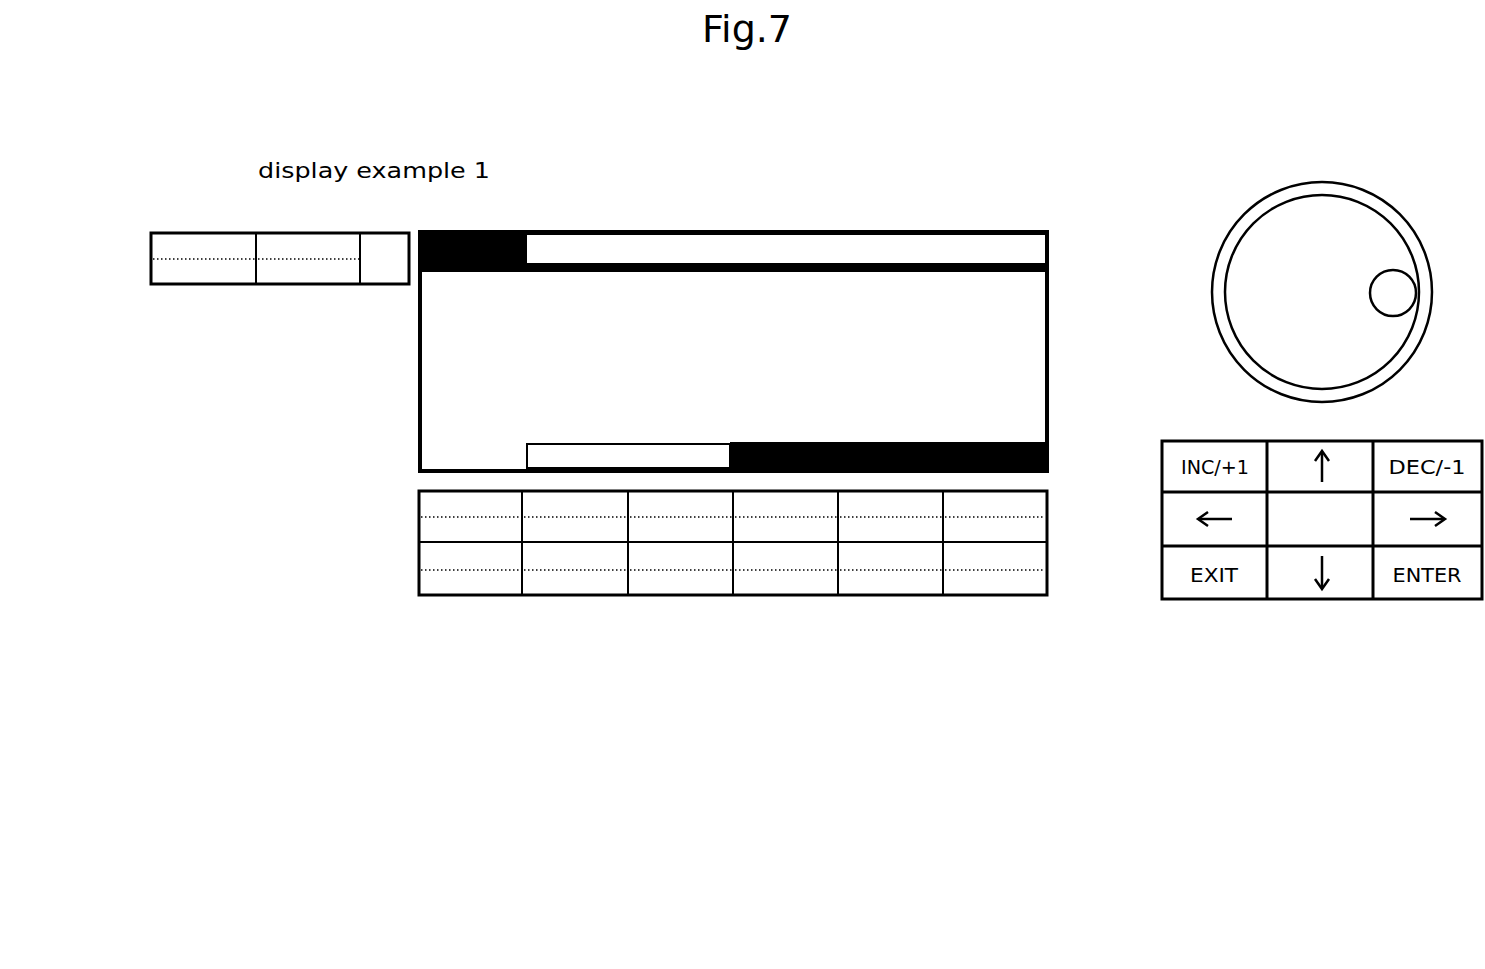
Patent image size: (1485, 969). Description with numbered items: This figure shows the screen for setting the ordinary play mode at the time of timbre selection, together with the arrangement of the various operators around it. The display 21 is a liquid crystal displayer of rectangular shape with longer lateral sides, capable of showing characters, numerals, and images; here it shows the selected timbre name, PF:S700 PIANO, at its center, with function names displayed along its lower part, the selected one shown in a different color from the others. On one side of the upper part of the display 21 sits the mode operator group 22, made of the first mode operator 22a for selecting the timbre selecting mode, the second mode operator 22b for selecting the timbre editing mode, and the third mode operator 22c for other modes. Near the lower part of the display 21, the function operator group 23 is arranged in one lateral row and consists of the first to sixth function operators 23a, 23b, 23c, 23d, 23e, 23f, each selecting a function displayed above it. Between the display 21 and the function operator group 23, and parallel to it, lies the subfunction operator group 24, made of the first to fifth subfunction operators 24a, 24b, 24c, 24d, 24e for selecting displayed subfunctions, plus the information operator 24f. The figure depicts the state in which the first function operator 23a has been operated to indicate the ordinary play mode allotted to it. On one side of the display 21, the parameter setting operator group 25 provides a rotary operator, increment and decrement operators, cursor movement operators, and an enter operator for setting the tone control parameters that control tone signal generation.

The display 21 is at (1062, 387).
The mode operator group 22 is at (280, 324).
The first mode operator 22a is at (197, 272).
The second mode operator 22b is at (312, 272).
The third mode operator 22c is at (385, 278).
The function operator group 23 is at (687, 612).
The first function operator 23a is at (472, 580).
The second function operator 23b is at (583, 580).
The third function operator 23c is at (693, 580).
The fourth function operator 23d is at (795, 580).
The fifth function operator 23e is at (900, 580).
The sixth function operator 23f is at (1000, 585).
The subfunction operator group 24 is at (687, 576).
The first subfunction operator 24a is at (448, 531).
The second subfunction operator 24b is at (553, 531).
The third subfunction operator 24c is at (663, 531).
The fourth subfunction operator 24d is at (763, 531).
The fifth subfunction operator 24e is at (868, 531).
The information operator 24f is at (973, 531).
The parameter setting operator group 25 is at (1190, 325).